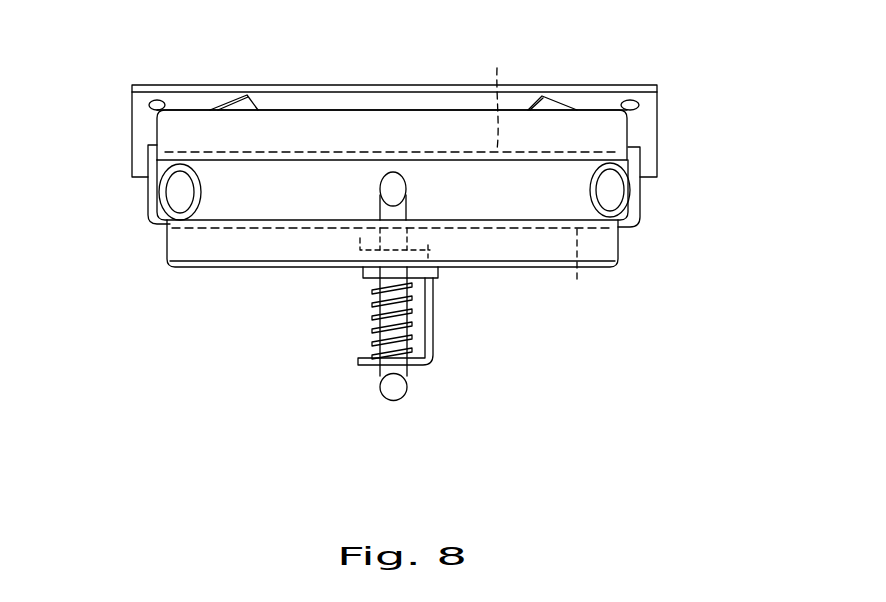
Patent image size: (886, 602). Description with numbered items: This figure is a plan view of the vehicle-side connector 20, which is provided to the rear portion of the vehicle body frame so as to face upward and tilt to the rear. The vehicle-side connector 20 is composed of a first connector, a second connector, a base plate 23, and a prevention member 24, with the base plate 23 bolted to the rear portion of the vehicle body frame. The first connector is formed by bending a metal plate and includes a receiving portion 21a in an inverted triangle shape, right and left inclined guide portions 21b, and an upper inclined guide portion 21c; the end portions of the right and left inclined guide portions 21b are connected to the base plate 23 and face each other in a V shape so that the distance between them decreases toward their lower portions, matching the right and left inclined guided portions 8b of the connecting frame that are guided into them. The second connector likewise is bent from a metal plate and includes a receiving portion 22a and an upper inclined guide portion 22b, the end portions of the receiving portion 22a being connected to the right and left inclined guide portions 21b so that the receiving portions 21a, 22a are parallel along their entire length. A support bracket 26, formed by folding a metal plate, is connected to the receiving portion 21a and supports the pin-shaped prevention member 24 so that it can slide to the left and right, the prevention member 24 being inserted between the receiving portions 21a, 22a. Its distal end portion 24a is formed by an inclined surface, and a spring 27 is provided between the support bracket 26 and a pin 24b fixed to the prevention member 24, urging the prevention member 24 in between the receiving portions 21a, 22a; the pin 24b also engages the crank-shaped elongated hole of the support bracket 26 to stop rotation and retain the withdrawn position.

The inclined guided portion 8b is at (183, 157).
The vehicle-side connector 20 is at (242, 301).
The receiving portion 21a is at (575, 275).
The inclined guide portion 21b is at (145, 185).
The upper inclined guide portion 21c is at (280, 250).
The receiving portion 22a is at (502, 95).
The upper inclined guide portion 22b is at (290, 132).
The base plate 23 is at (648, 131).
The prevention member 24 is at (393, 397).
The distal end portion 24a is at (393, 180).
The pin 24b is at (433, 270).
The support bracket 26 is at (433, 347).
The spring 27 is at (372, 322).